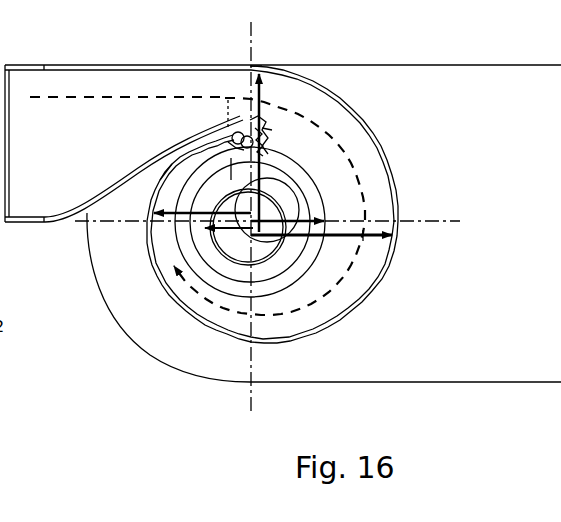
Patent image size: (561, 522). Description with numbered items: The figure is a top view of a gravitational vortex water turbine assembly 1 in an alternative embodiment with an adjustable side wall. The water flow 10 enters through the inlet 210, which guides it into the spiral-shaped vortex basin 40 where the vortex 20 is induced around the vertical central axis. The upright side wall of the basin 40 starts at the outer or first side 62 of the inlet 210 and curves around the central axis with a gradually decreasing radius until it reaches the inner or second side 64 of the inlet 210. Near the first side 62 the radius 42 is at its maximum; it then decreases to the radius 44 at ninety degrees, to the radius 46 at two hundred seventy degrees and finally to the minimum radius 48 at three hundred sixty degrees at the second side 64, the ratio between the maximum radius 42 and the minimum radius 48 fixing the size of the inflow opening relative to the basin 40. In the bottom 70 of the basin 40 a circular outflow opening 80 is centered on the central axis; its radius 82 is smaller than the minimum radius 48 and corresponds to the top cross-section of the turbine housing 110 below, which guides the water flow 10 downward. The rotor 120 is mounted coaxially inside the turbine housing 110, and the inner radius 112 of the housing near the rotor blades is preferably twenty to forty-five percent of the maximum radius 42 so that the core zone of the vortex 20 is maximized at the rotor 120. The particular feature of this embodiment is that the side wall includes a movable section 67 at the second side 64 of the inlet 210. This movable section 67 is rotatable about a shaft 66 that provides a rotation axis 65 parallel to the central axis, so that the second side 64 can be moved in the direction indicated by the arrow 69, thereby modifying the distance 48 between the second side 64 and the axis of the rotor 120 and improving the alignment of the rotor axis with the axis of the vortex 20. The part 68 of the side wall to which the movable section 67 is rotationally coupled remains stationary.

The gravitational vortex water turbine assembly 1 is at (119, 368).
The water flow 10 is at (124, 97).
The vortex 20 is at (358, 259).
The spiral-shaped vortex basin 40 is at (388, 125).
The maximum radius 42 is at (272, 153).
The radius at ninety degrees 44 is at (321, 243).
The radius at two hundred seventy degrees 46 is at (202, 206).
The minimum radius 48 is at (236, 140).
The first side of the inlet 62 is at (262, 63).
The second side of the inlet 64 is at (253, 127).
The rotation axis 65 is at (236, 134).
The shaft 66 is at (228, 142).
The movable section 67 is at (268, 153).
The stationary part of the side wall 68 is at (181, 162).
The arrow 69 is at (266, 137).
The bottom of the basin 70 is at (358, 284).
The outflow opening 80 is at (293, 272).
The radius of the outflow opening 82 is at (287, 214).
The turbine housing 110 is at (259, 277).
The inner radius of the turbine housing 112 is at (235, 222).
The rotor 120 is at (240, 264).
The inlet 210 is at (128, 143).